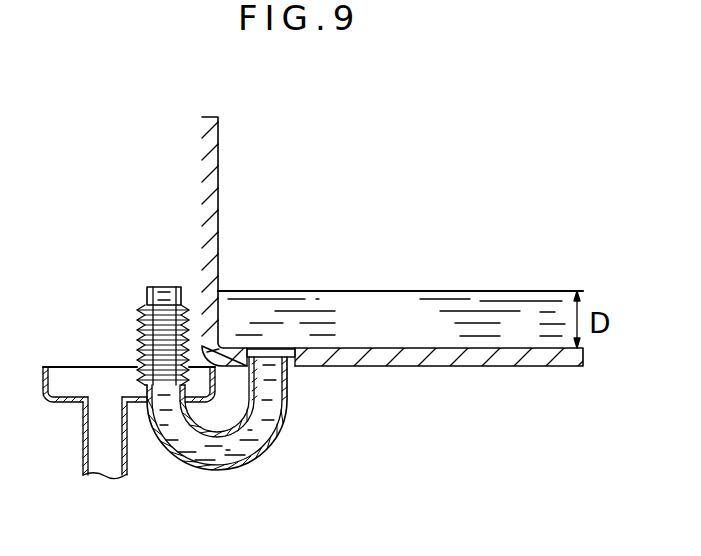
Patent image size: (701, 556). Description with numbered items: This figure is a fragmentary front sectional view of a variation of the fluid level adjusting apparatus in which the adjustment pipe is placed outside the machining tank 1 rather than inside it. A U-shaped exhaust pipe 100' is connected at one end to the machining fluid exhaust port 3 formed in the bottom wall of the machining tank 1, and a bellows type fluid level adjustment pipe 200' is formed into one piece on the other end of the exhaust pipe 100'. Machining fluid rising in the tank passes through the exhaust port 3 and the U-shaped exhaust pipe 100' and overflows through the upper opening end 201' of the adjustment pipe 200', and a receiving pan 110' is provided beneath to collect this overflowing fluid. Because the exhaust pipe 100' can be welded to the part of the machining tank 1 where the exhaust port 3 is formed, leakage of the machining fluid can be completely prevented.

The machining tank 1 is at (200, 142).
The machining fluid exhaust port 3 is at (285, 337).
The U-shaped exhaust pipe 100' is at (256, 426).
The receiving pan 110' is at (127, 393).
The bellows type fluid level adjustment pipe 200' is at (131, 322).
The upper opening end 201' is at (151, 261).